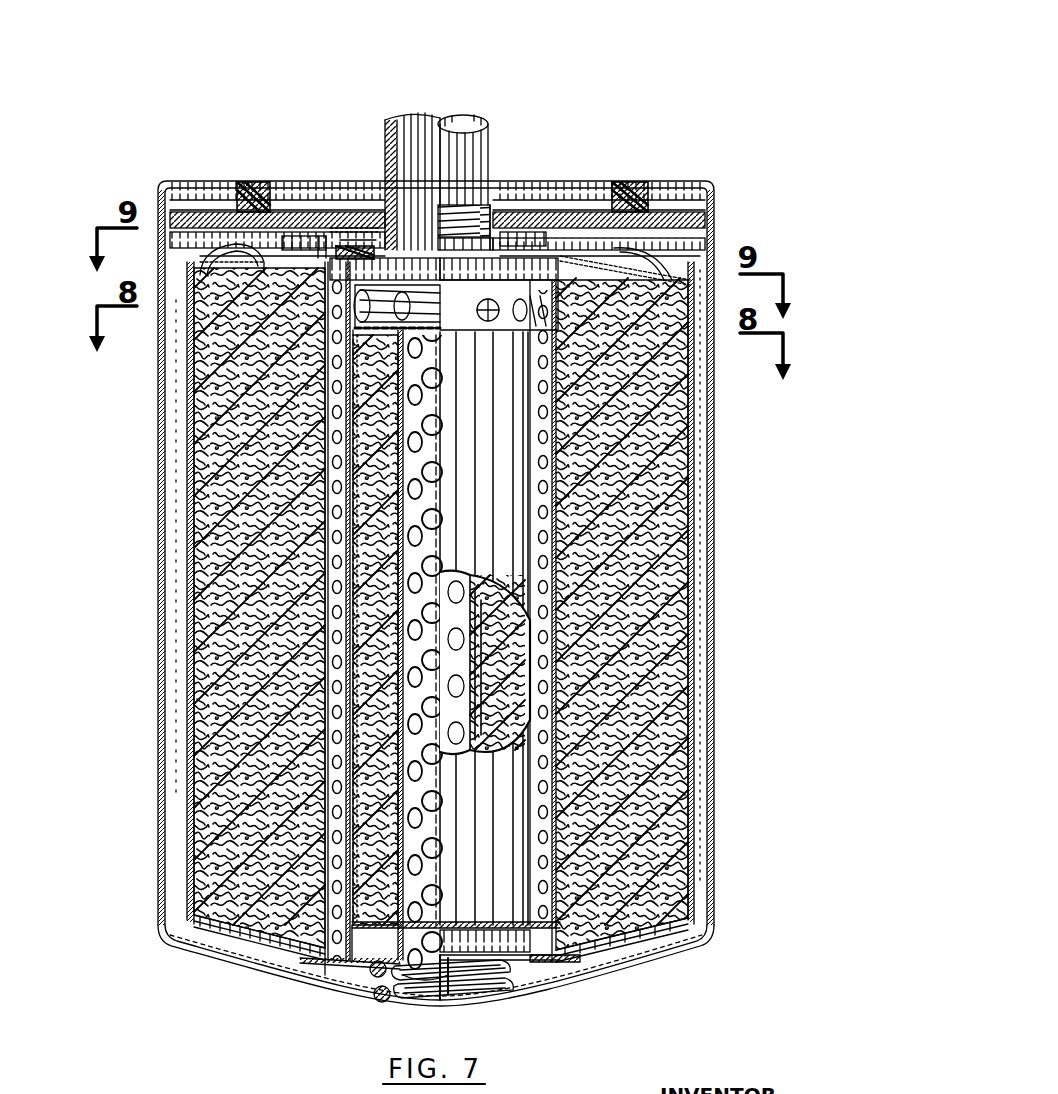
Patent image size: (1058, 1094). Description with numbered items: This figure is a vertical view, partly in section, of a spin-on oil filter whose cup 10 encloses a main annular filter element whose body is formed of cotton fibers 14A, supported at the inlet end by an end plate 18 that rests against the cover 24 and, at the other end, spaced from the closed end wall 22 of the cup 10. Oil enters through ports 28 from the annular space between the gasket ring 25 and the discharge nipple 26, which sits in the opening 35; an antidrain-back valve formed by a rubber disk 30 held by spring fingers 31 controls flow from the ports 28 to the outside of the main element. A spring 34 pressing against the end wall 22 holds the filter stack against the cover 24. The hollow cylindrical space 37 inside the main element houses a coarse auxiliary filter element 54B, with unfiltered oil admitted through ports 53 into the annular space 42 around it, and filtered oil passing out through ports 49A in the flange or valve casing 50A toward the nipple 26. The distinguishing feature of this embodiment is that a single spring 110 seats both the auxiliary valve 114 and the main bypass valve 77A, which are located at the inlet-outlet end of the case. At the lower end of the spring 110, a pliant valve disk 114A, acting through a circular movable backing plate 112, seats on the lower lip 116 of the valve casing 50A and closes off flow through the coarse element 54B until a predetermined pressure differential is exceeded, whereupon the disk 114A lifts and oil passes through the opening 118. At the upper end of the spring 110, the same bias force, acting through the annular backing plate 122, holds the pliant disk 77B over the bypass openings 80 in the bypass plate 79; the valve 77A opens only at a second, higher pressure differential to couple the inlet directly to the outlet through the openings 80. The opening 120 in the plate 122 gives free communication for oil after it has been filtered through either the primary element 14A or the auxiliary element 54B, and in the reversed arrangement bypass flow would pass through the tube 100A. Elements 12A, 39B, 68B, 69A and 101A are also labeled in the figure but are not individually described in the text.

The cup 10 is at (712, 532).
The inner wall / liner 12A is at (692, 627).
The main filter body of cotton fibers 14A is at (623, 733).
The end plate 18 is at (637, 263).
The end wall 22 is at (610, 983).
The cover 24 is at (712, 218).
The gasket ring 25 is at (627, 187).
The discharge nipple 26 is at (423, 113).
The ports 28 is at (337, 233).
The rubber disk 30 is at (650, 229).
The spring fingers 31 is at (213, 251).
The spring 34 is at (507, 985).
The opening 35 is at (497, 213).
The cylindrical space 37 is at (333, 562).
The perforated center tube 39B is at (335, 667).
The annular space 42 is at (352, 617).
The ports 49A is at (345, 345).
The valve casing 50A is at (497, 325).
The ports 53 is at (360, 958).
The auxiliary filtering element 54B is at (393, 727).
The bottom end cap ring 68B is at (547, 960).
The coil spring end 69A is at (407, 973).
The main bypass valve 77A is at (348, 253).
The valve seating disk 77B is at (312, 36).
The bypass plate 79 is at (310, 252).
The bypass openings 80 is at (350, 242).
The tube 100A is at (430, 697).
The inner tube wall 101A is at (415, 655).
The spring 110 is at (346, 288).
The backing plate 112 is at (437, 340).
The auxiliary valve 114 is at (345, 356).
The valve seating disk 114A is at (190, 627).
The lower lip 116 is at (347, 385).
The opening 118 is at (440, 345).
The opening 120 is at (417, 253).
The backing plate 122 is at (326, 220).